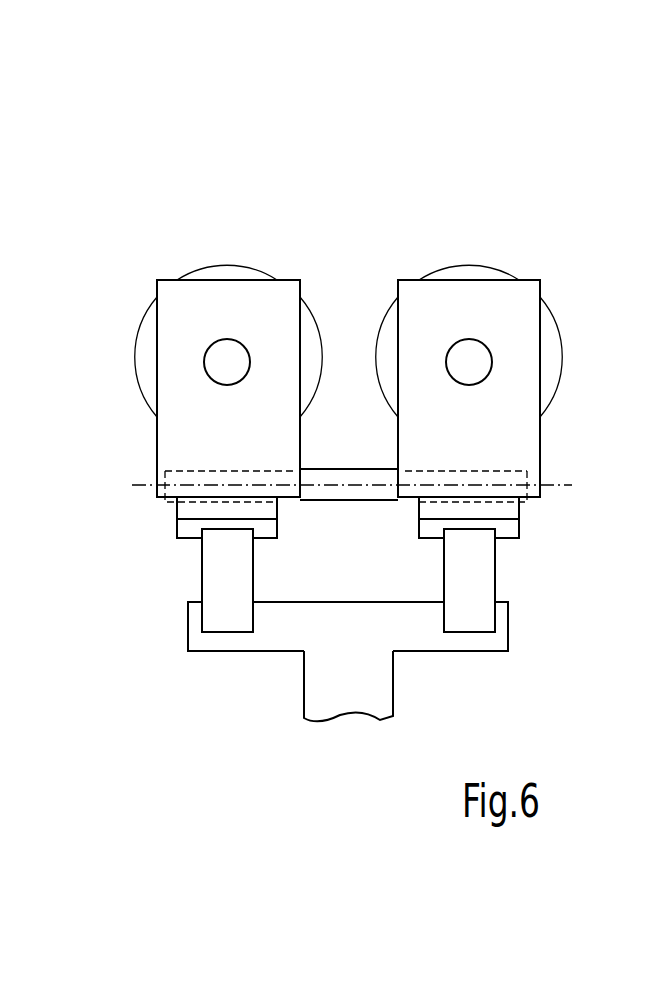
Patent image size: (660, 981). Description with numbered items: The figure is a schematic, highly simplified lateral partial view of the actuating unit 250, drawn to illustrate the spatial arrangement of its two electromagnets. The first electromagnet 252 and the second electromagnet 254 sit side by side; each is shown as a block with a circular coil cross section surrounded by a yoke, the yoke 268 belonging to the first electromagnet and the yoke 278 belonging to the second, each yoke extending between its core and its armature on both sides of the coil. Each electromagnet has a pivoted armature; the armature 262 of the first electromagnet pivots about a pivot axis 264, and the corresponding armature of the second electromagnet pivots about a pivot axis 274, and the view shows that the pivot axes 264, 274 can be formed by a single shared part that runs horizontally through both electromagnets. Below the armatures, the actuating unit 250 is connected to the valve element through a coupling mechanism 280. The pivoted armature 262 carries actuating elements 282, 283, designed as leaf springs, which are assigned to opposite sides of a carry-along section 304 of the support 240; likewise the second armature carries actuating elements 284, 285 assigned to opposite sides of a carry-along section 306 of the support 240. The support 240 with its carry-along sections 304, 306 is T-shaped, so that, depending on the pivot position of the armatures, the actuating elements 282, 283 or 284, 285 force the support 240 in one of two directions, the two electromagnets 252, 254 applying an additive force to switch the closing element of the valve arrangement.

The support 240 is at (372, 678).
The actuating unit 250 is at (372, 188).
The first electromagnet 252 is at (189, 273).
The second electromagnet 254 is at (512, 273).
The armature 262 is at (192, 509).
The pivot axis 264 is at (507, 512).
The yoke 268 is at (191, 444).
The pivot axis 274 is at (400, 387).
The yoke 278 is at (508, 453).
The coupling mechanism 280 is at (349, 718).
The actuating element 282 is at (143, 580).
The actuating element 283 is at (222, 577).
The actuating element 284 is at (550, 580).
The actuating element 285 is at (475, 563).
The carry-along section 304 is at (208, 642).
The carry-along section 306 is at (487, 640).